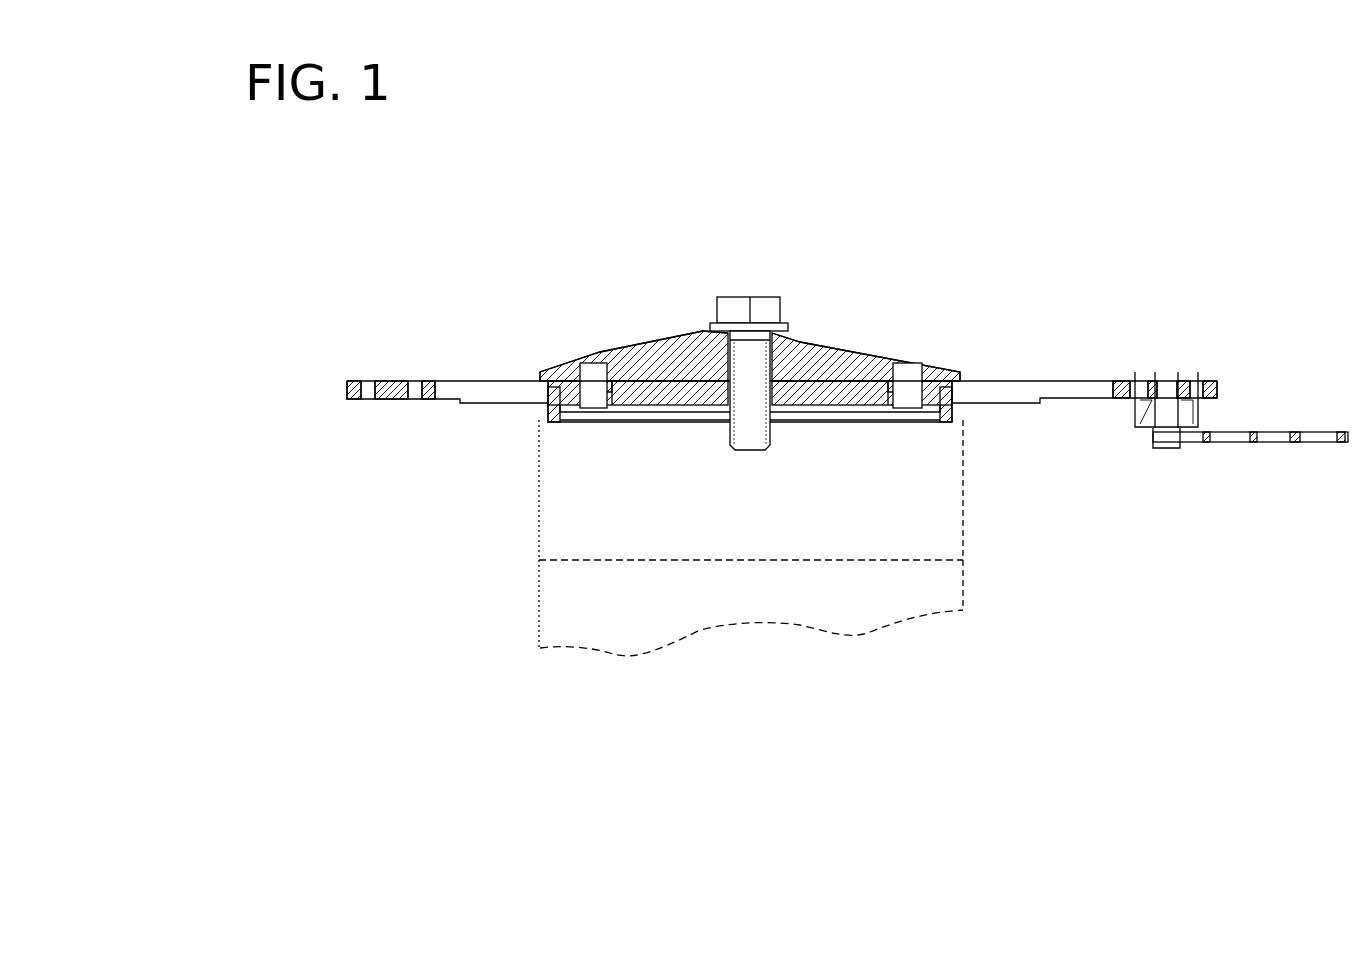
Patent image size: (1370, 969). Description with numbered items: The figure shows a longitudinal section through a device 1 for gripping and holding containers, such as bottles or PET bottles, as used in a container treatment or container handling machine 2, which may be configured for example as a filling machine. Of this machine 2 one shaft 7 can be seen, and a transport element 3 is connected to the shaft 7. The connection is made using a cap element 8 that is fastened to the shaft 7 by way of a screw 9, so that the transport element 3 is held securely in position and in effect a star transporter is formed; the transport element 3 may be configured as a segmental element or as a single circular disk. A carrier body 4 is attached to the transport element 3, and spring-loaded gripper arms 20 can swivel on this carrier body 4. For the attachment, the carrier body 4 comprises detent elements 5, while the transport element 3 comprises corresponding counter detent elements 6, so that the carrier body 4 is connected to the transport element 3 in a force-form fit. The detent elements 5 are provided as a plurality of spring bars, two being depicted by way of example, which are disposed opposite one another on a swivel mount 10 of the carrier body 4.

The device for gripping and holding containers 1 is at (1083, 323).
The container treatment machine 2 is at (493, 552).
The transport element 3 is at (1048, 397).
The carrier body 4 is at (1167, 445).
The detent elements 5 is at (1203, 376).
The counter detent elements 6 is at (1166, 400).
The shaft 7 is at (650, 515).
The cap element 8 is at (648, 345).
The screw 9 is at (752, 298).
The swivel mount 10 is at (1167, 372).
The spring-loaded gripper arms 20 is at (1298, 435).